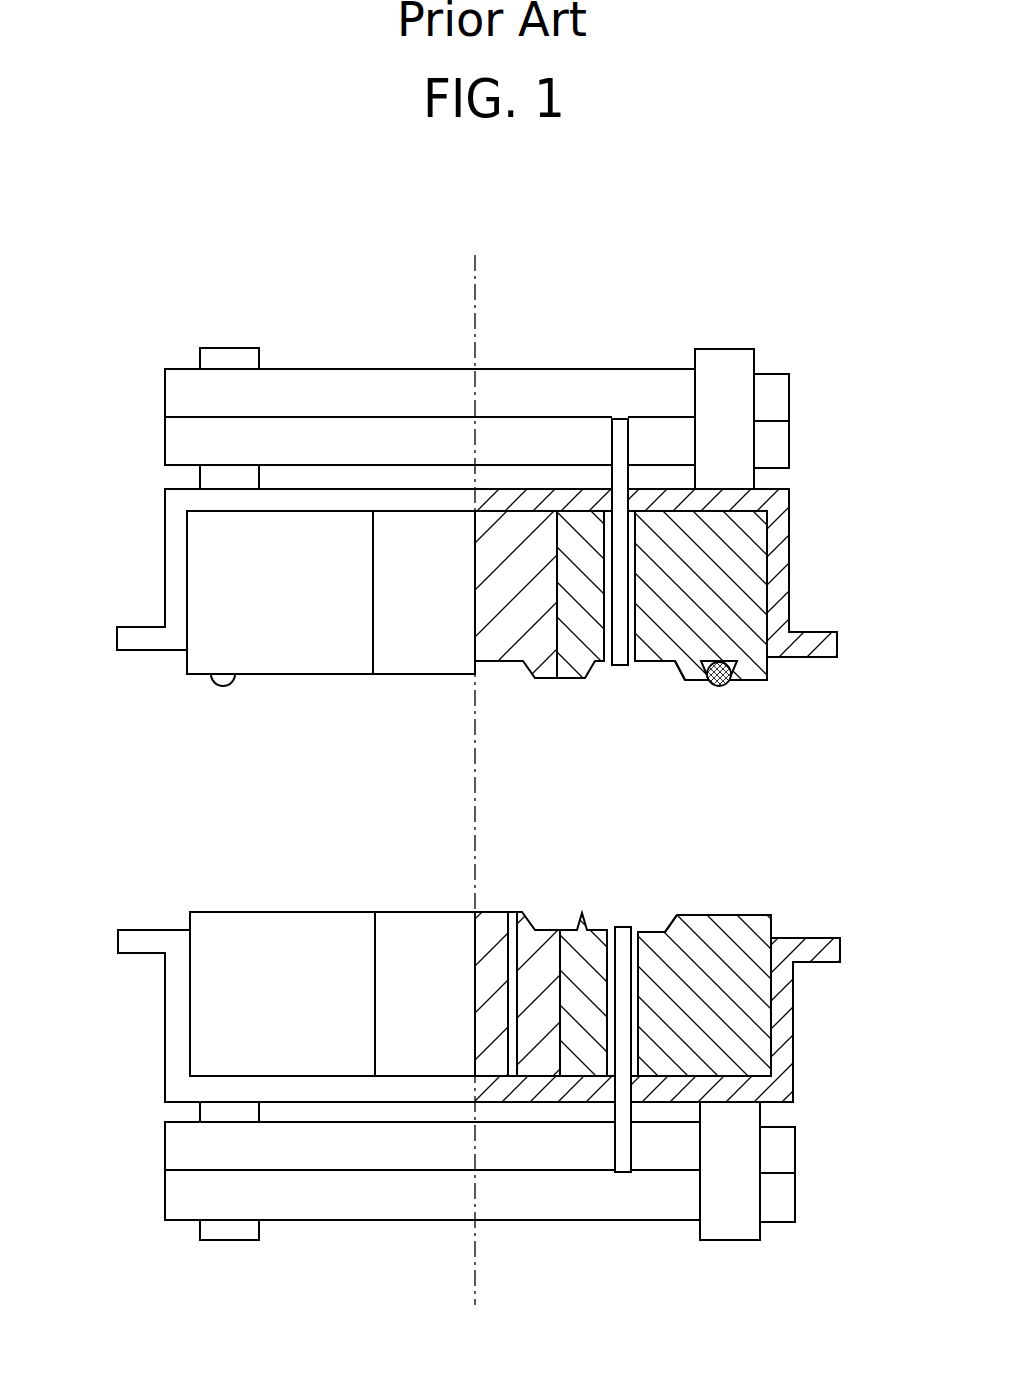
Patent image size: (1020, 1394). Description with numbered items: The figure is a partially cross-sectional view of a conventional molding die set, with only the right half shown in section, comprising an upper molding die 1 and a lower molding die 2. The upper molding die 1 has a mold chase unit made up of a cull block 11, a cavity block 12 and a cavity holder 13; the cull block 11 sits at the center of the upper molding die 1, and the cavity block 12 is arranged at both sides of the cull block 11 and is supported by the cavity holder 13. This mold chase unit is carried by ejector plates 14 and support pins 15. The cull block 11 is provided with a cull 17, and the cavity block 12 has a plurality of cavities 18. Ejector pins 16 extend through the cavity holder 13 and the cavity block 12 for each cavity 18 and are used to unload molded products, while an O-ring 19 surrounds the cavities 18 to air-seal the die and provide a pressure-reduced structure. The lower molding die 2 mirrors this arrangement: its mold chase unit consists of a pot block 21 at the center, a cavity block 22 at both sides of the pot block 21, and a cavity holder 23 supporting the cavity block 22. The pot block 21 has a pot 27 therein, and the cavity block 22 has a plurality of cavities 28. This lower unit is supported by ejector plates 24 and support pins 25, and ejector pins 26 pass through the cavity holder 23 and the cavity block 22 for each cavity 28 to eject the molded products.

The upper molding die 1 is at (128, 547).
The cull block 11 is at (408, 655).
The cavity block 12 is at (730, 543).
The cavity holder 13 is at (777, 617).
The ejector plates 14 is at (778, 440).
The support pins 15 is at (737, 349).
The ejector pins 16 is at (610, 447).
The cull 17 is at (499, 668).
The cavities 18 is at (643, 668).
The O-ring 19 is at (733, 688).
The lower molding die 2 is at (116, 1015).
The pot block 21 is at (403, 925).
The cavity block 22 is at (770, 917).
The cavity holder 23 is at (785, 1038).
The ejector plates 24 is at (783, 1198).
The support pins 25 is at (713, 1236).
The ejector pins 26 is at (618, 928).
The pot 27 is at (514, 916).
The cavities 28 is at (658, 928).